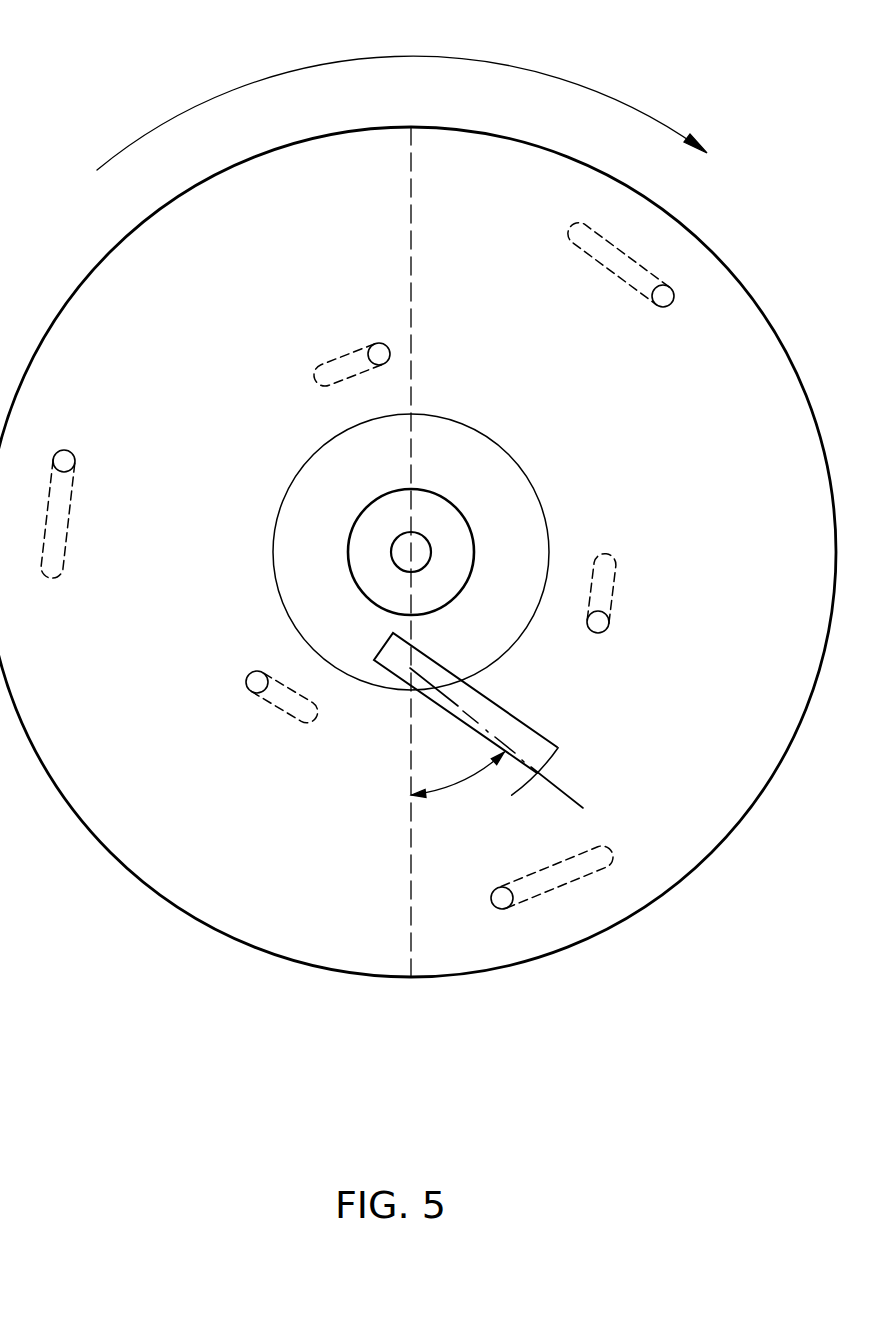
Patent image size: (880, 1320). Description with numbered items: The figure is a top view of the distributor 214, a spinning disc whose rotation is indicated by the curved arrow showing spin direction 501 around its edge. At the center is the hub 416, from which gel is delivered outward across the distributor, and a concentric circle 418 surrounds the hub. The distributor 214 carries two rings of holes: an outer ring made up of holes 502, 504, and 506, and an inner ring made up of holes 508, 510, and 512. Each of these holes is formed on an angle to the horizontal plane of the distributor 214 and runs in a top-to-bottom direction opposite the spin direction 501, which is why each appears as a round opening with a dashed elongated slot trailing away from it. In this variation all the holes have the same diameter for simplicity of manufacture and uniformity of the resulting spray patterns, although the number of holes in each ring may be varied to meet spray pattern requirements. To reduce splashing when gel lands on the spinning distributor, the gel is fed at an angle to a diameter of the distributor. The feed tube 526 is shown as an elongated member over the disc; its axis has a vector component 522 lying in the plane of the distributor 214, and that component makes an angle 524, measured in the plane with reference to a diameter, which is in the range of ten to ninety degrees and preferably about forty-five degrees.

The distributor 214 is at (226, 937).
The spin direction 501 is at (372, 57).
The hub 416 is at (443, 493).
The annular region 418 is at (486, 498).
The hole 502 is at (62, 450).
The hole 504 is at (662, 307).
The hole 506 is at (501, 909).
The hole 508 is at (380, 343).
The hole 510 is at (600, 633).
The hole 512 is at (250, 674).
The vector component 522 is at (562, 787).
The angle 524 is at (456, 787).
The feed tube 526 is at (493, 710).